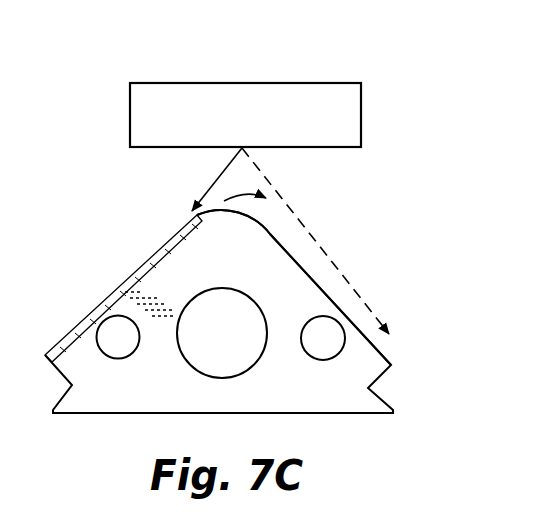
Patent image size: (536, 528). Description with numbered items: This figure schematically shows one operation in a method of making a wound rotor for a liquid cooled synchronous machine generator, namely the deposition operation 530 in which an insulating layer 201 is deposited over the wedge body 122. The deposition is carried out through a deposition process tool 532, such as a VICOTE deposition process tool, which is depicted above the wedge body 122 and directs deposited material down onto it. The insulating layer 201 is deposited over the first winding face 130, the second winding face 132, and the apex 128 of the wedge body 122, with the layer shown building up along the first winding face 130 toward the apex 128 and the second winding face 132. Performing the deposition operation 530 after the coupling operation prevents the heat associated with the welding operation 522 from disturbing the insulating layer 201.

The deposition operation 530 is at (352, 51).
The welding operation 522 is at (130, 118).
The deposition process tool 532 is at (361, 115).
The wedge body 122 is at (100, 392).
The first winding face 130 is at (147, 262).
The insulating layer 201 is at (112, 290).
The apex 128 is at (233, 212).
The second winding face 132 is at (326, 290).